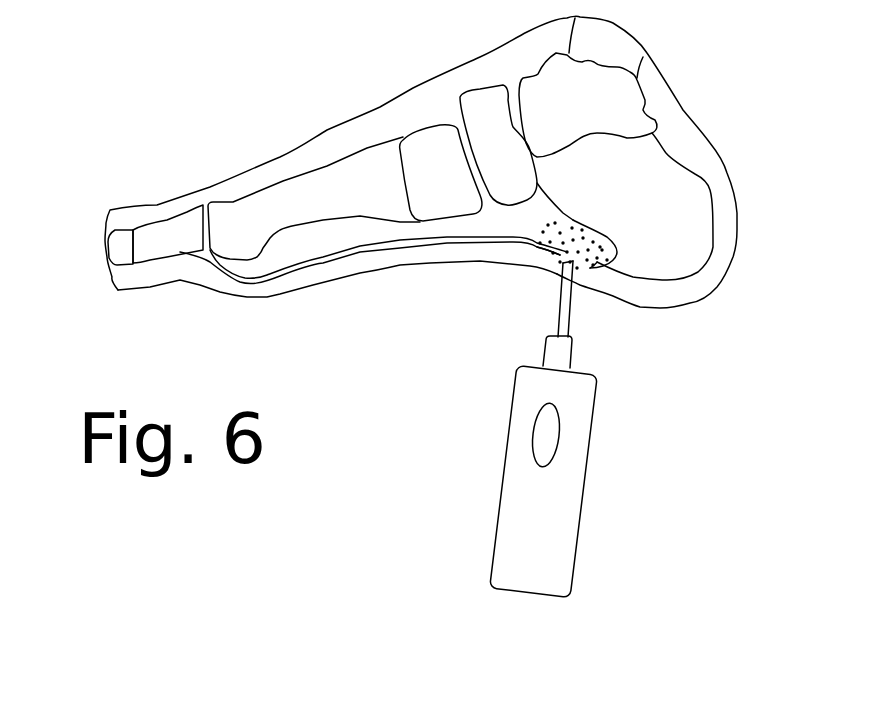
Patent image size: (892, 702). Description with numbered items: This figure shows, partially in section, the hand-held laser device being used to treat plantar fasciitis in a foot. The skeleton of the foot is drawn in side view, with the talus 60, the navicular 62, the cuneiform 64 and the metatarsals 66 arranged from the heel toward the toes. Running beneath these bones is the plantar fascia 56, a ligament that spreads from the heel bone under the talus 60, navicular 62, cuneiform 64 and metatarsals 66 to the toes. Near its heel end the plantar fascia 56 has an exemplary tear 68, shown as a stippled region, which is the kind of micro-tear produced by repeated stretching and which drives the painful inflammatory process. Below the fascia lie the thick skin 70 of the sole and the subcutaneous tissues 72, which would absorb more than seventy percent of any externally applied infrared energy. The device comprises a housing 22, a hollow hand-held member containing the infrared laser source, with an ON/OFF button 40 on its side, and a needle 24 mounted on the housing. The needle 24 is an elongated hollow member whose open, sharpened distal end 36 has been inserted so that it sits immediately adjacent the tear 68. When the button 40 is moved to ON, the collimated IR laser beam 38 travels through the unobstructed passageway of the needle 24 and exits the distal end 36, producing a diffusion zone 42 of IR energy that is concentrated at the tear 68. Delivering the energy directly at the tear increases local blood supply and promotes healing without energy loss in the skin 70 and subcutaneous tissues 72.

The housing 22 is at (572, 440).
The needle 24 is at (567, 303).
The distal end of the needle 36 is at (578, 268).
The IR laser beam 38 is at (562, 263).
The ON/OFF switch or button 40 is at (543, 440).
The diffusion zone 42 is at (557, 253).
The plantar fascia 56 is at (480, 243).
The talus 60 is at (628, 108).
The navicular 62 is at (488, 117).
The cuneiform 64 is at (442, 143).
The metatarsals 66 is at (327, 190).
The tear 68 is at (572, 257).
The skin 70 is at (320, 287).
The subcutaneous tissues 72 is at (397, 268).